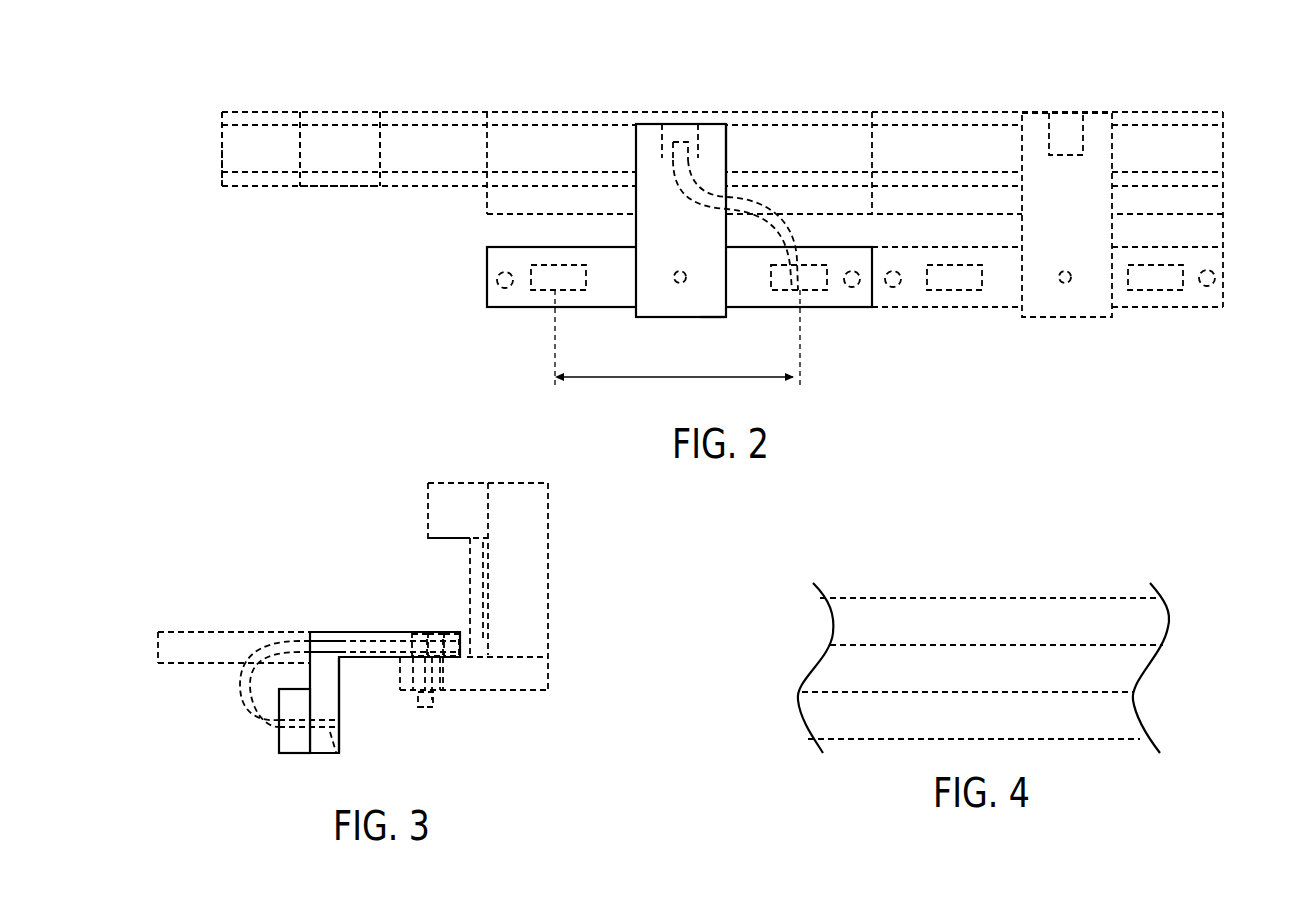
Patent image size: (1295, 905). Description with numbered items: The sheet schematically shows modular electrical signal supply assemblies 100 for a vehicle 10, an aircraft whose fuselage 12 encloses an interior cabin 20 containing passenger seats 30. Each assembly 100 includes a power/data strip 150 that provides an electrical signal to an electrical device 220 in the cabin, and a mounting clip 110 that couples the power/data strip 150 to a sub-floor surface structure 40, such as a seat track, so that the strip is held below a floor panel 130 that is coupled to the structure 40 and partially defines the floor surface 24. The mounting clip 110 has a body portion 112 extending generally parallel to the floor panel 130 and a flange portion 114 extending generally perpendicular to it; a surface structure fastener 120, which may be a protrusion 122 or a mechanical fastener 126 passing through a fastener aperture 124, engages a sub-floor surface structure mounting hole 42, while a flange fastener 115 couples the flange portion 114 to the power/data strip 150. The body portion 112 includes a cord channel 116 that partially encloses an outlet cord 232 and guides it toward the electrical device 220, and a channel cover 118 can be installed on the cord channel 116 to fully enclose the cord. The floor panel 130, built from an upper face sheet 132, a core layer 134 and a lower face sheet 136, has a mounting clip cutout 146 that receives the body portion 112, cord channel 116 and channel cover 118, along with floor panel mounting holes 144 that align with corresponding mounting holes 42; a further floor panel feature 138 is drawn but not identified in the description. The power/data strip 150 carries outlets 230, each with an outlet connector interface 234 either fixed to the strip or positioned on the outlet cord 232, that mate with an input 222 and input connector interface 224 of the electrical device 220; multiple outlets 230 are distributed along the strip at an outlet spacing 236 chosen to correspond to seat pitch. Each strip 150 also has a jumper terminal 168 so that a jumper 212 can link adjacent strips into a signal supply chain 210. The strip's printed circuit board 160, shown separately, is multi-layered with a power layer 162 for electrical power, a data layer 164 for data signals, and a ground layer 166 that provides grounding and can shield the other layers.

In FIG. 3, the vehicle 10 is at (305, 452).
In FIG. 3, the fuselage 12 is at (312, 483).
In FIG. 3, the interior cabin 20 is at (317, 512).
In FIG. 2, the floor surface 24 is at (533, 93).
In FIG. 3, the passenger seat 30 is at (500, 483).
In FIG. 2, the sub-floor surface structure 40 is at (487, 214).
In FIG. 3, the sub-floor surface structure 40 is at (525, 690).
In FIG. 3, the sub-floor surface structure mounting hole 42 is at (425, 720).
In FIG. 2, the modular electrical signal supply assembly 100 is at (540, 22).
In FIG. 3, the modular electrical signal supply assembly 100 is at (323, 588).
In FIG. 4, the modular electrical signal supply assembly 100 is at (985, 523).
In FIG. 2, the mounting clip 110 is at (690, 322).
In FIG. 3, the mounting clip 110 is at (342, 742).
In FIG. 2, the body portion 112 is at (730, 150).
In FIG. 3, the body portion 112 is at (400, 632).
In FIG. 2, the flange portion 114 is at (715, 322).
In FIG. 3, the flange portion 114 is at (340, 712).
In FIG. 2, the flange fastener 115 is at (680, 284).
In FIG. 3, the flange fastener 115 is at (330, 748).
In FIG. 2, the cord channel 116 is at (695, 124).
In FIG. 3, the cord channel 116 is at (390, 632).
In FIG. 2, the channel cover 118 is at (710, 124).
In FIG. 3, the surface structure fastener 120 is at (440, 700).
In FIG. 3, the protrusion 122 is at (435, 720).
In FIG. 3, the fastener aperture 124 is at (437, 630).
In FIG. 3, the mechanical fastener 126 is at (420, 633).
In FIG. 2, the floor panel 130 is at (350, 108).
In FIG. 3, the floor panel 130 is at (230, 632).
In FIG. 2, the upper face sheet 132 is at (262, 112).
In FIG. 2, the core layer 134 is at (222, 160).
In FIG. 2, the lower face sheet 136 is at (328, 185).
In FIG. 2, the board section 138 is at (410, 158).
In FIG. 2, the floor panel mounting hole 144 is at (698, 122).
In FIG. 2, the mounting clip cutout 146 is at (300, 120).
In FIG. 2, the power/data strip 150 is at (765, 316).
In FIG. 3, the power/data strip 150 is at (293, 755).
In FIG. 4, the power/data strip 150 is at (977, 557).
In FIG. 2, the printed circuit board 160 is at (742, 318).
In FIG. 3, the printed circuit board 160 is at (290, 755).
In FIG. 4, the printed circuit board 160 is at (970, 585).
In FIG. 4, the power layer 162 is at (1055, 623).
In FIG. 4, the data layer 164 is at (1087, 665).
In FIG. 4, the ground layer 166 is at (1103, 715).
In FIG. 2, the jumper terminal 168 is at (497, 272).
In FIG. 2, the signal supply chain 210 is at (1228, 275).
In FIG. 2, the jumper 212 is at (893, 288).
In FIG. 3, the electrical device 220 is at (450, 482).
In FIG. 3, the input 222 is at (455, 547).
In FIG. 3, the input connector interface 224 is at (470, 562).
In FIG. 2, the outlet 230 is at (565, 290).
In FIG. 3, the outlet 230 is at (278, 733).
In FIG. 2, the outlet cord 232 is at (778, 240).
In FIG. 3, the outlet cord 232 is at (250, 712).
In FIG. 2, the outlet connector interface 234 is at (548, 290).
In FIG. 2, the outlet spacing 236 is at (718, 378).